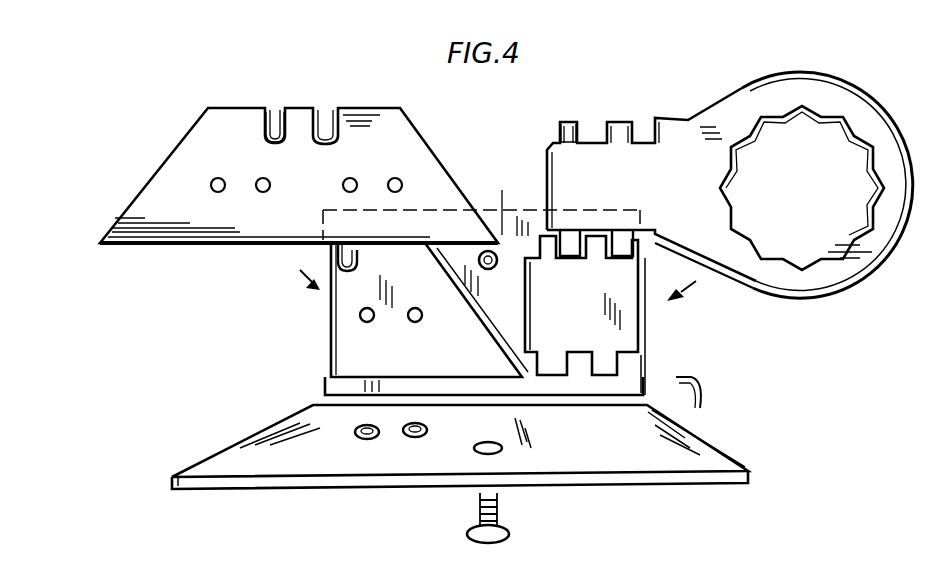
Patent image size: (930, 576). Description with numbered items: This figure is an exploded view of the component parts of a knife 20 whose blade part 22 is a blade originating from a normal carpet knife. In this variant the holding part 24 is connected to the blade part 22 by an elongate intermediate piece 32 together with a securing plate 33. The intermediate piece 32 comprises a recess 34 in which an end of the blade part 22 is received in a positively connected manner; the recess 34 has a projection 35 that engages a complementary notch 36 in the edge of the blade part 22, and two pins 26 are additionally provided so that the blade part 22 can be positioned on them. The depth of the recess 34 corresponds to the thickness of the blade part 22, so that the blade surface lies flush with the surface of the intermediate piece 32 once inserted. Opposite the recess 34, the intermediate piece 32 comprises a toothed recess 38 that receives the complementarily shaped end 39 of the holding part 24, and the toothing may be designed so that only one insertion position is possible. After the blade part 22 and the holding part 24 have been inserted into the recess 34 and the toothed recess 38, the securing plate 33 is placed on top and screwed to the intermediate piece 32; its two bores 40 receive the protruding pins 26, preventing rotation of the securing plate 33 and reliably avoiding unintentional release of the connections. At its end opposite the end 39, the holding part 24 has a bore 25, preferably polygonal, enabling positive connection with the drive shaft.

The knife 20 is at (795, 351).
The blade part 22 is at (168, 176).
The holding part 24 is at (712, 131).
The bore 25 is at (767, 252).
The pins 26 is at (413, 308).
The intermediate piece 32 is at (508, 233).
The securing plate 33 is at (609, 461).
The recess 34 is at (333, 372).
The projection 35 is at (350, 263).
The notch 36 is at (277, 123).
The toothed recess 38 is at (634, 337).
The end 39 is at (578, 158).
The bores 40 is at (410, 420).